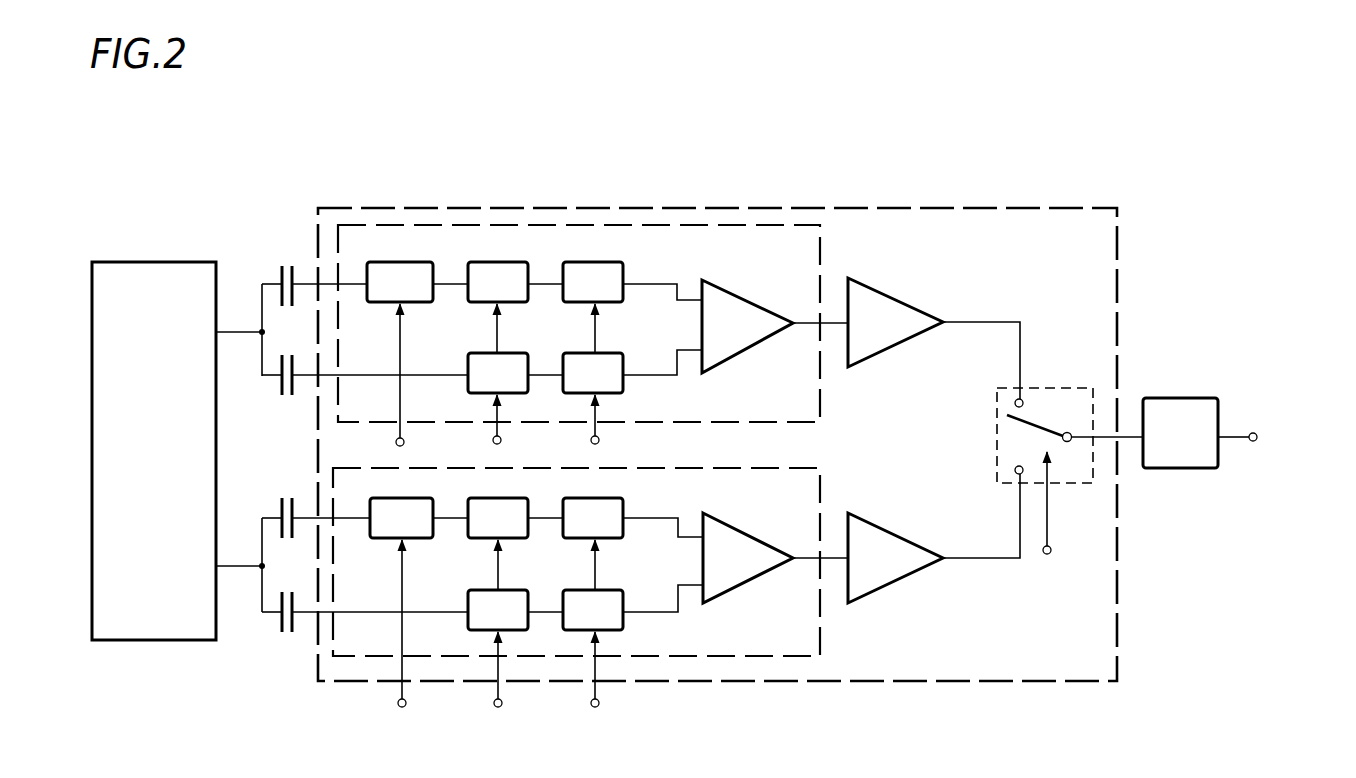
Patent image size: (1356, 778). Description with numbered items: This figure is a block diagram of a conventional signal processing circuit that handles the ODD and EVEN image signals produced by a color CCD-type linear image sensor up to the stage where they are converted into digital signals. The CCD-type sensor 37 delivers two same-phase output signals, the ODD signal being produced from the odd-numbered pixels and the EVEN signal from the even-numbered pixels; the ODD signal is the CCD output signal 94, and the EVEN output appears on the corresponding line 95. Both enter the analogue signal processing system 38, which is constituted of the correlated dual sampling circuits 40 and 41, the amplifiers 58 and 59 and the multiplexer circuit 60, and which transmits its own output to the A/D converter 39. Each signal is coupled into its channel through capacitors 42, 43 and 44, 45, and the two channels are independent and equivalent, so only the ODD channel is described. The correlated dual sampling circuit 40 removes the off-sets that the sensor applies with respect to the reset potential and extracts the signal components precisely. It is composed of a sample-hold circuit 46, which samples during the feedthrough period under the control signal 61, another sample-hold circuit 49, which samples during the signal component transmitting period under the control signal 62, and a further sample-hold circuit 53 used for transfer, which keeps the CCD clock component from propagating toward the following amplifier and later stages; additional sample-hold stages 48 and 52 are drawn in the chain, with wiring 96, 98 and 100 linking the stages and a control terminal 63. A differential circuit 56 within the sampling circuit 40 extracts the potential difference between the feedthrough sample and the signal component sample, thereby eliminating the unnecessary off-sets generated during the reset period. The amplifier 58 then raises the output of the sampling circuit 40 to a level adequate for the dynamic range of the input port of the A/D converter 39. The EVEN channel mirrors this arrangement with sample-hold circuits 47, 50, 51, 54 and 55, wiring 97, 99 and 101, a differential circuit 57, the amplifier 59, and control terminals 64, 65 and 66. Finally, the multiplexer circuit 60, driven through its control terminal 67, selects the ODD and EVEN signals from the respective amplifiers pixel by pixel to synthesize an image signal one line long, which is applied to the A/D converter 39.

The CCD-type sensor 37 is at (140, 262).
The analogue signal processing system 38 is at (662, 208).
The A/D converter 39 is at (1177, 398).
The correlated dual sampling circuit 40 is at (826, 258).
The correlated dual sampling circuit 41 is at (826, 498).
The coupling capacitor 42 is at (282, 270).
The coupling capacitor 43 is at (282, 392).
The coupling capacitor 44 is at (282, 502).
The coupling capacitor 45 is at (282, 632).
The sample-hold circuit 46 is at (373, 302).
The sample and hold circuit 47 is at (376, 538).
The sample and hold circuit 48 is at (476, 302).
The sample-hold circuit 49 is at (468, 391).
The sample and hold circuit 50 is at (470, 538).
The sample and hold circuit 51 is at (468, 628).
The sample and hold circuit 52 is at (623, 292).
The sample-hold circuit 53 is at (623, 386).
The sample and hold circuit 54 is at (623, 528).
The sample and hold circuit 55 is at (623, 620).
The differential circuit 56 is at (756, 346).
The differential amplifier 57 is at (752, 580).
The amplifier 58 is at (906, 350).
The amplifier 59 is at (906, 585).
The multiplexer circuit 60 is at (1059, 388).
The control signal 61 is at (396, 443).
The control signal 62 is at (501, 441).
The sampling pulse input terminal 63 is at (599, 441).
The sampling pulse input terminal 64 is at (403, 707).
The sampling pulse input terminal 65 is at (499, 707).
The sampling pulse input terminal 66 is at (596, 707).
The switch control input terminal 67 is at (1049, 554).
The CCD output signal 94 is at (237, 324).
The even output line 95 is at (237, 562).
The signal line 96 is at (450, 282).
The signal line 97 is at (454, 516).
The signal line 98 is at (546, 372).
The signal line 99 is at (550, 610).
The signal line 100 is at (656, 370).
The signal line 101 is at (652, 610).